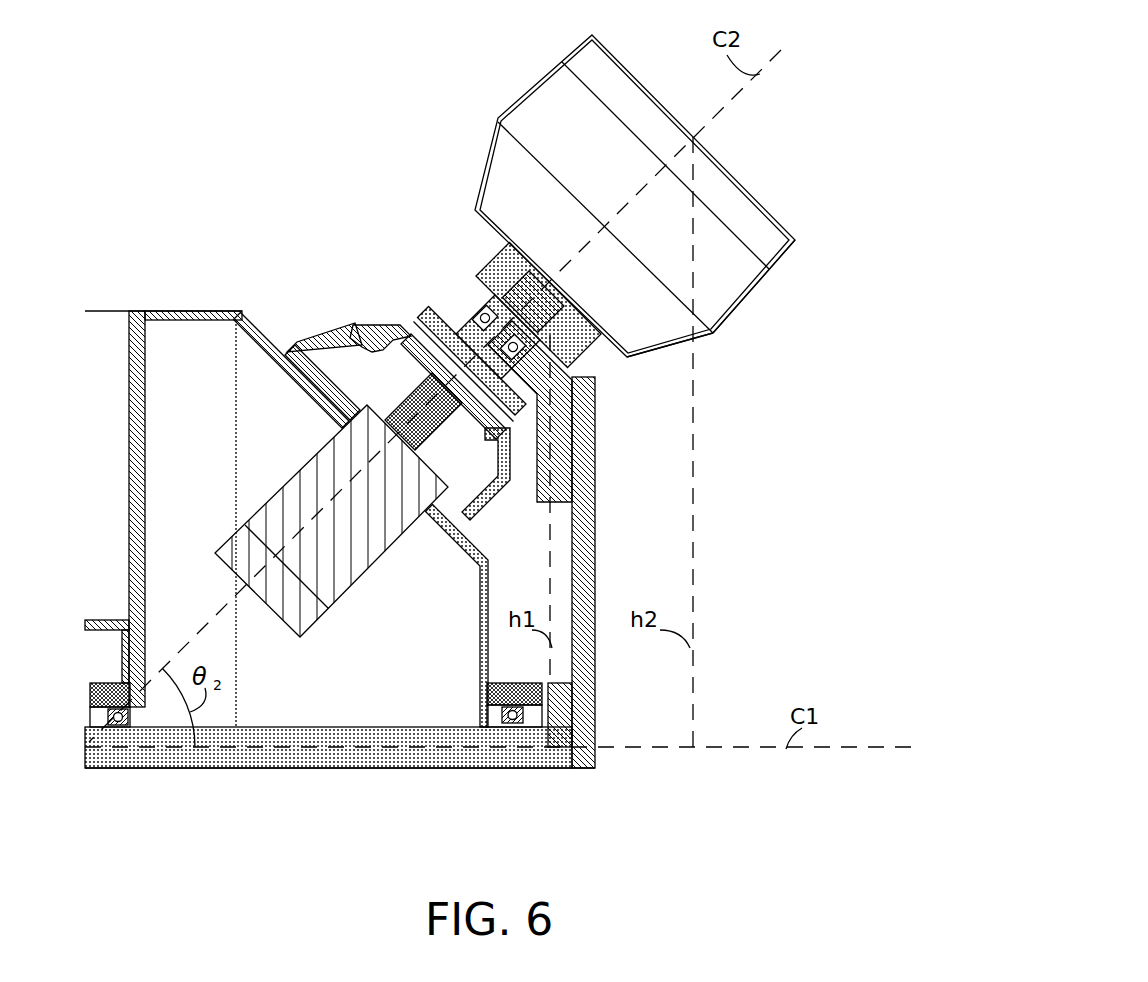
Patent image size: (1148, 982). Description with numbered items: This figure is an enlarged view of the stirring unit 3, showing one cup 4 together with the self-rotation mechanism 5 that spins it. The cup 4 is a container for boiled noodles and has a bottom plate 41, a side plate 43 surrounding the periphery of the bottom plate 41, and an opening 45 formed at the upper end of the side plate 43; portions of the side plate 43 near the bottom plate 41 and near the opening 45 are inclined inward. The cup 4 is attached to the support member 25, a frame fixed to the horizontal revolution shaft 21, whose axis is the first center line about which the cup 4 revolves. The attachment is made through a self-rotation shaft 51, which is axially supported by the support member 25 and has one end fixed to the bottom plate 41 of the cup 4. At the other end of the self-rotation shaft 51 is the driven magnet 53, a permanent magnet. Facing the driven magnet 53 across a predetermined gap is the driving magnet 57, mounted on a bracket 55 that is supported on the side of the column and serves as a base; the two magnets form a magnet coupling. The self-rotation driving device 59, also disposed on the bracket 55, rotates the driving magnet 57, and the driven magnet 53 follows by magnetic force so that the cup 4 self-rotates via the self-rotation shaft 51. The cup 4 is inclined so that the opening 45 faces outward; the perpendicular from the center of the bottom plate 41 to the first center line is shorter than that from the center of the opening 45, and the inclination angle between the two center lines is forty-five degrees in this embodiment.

The stirring unit 3 is at (320, 113).
The cup 4 is at (630, 201).
The self-rotation mechanism 5 is at (383, 263).
The revolution shaft 21 is at (352, 735).
The support member 25 is at (588, 432).
The bottom plate 41 is at (498, 222).
The side plate 43 is at (762, 296).
The opening 45 is at (768, 196).
The self-rotation shaft 51 is at (470, 330).
The driven magnet 53 is at (420, 318).
The bracket 55 is at (253, 332).
The driving magnet 57 is at (412, 352).
The self-rotation driving device 59 is at (345, 585).